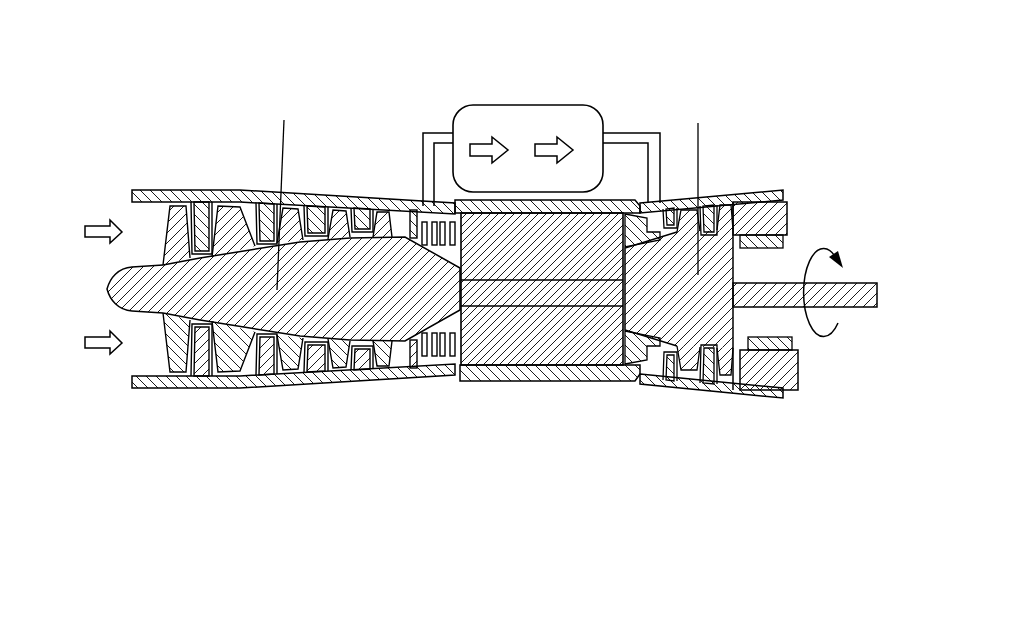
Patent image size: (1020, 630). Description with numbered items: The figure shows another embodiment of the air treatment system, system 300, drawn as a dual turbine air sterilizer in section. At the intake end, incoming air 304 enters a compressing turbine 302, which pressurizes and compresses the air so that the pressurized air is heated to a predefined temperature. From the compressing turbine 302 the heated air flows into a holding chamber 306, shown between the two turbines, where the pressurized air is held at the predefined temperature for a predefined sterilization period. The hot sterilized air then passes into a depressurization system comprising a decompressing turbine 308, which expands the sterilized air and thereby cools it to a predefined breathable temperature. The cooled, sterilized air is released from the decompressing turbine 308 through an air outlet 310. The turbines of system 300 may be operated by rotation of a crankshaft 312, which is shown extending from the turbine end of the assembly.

The system 300 is at (159, 57).
The compressing turbine 302 is at (231, 288).
The incoming air 304 is at (131, 268).
The holding chamber 306 is at (530, 118).
The decompressing turbine 308 is at (718, 266).
The air outlet 310 is at (775, 259).
The crankshaft 312 is at (862, 283).